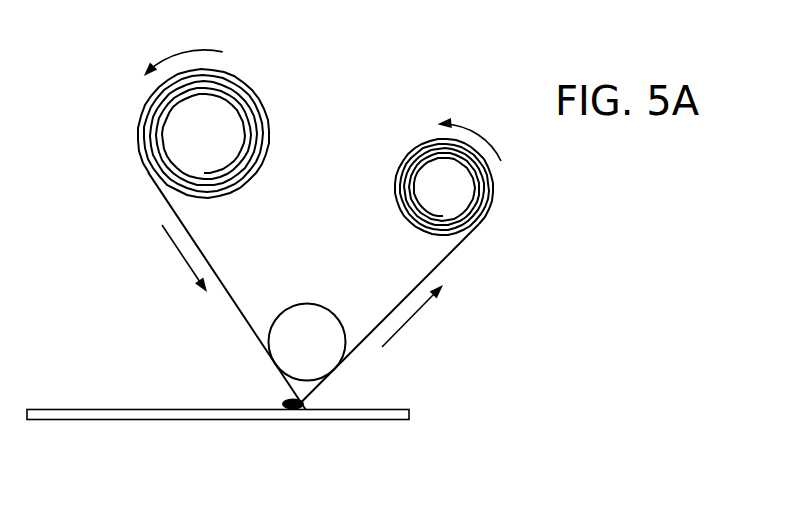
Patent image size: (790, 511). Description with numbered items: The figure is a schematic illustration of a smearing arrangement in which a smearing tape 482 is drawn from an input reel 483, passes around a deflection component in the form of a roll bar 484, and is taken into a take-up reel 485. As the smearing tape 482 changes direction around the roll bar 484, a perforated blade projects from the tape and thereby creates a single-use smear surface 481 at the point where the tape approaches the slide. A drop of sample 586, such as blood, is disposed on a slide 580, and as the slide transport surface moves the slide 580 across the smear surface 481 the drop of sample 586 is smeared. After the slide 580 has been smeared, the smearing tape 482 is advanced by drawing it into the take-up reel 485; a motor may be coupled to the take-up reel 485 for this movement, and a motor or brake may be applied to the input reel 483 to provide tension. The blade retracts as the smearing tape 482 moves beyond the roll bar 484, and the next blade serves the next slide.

The input reel 483 is at (203, 132).
The take-up reel 485 is at (443, 187).
The roll bar 484 is at (308, 313).
The smearing tape 482 is at (457, 249).
The smear surface 481 is at (293, 408).
The slide 580 is at (385, 421).
The drop of sample 586 is at (277, 402).